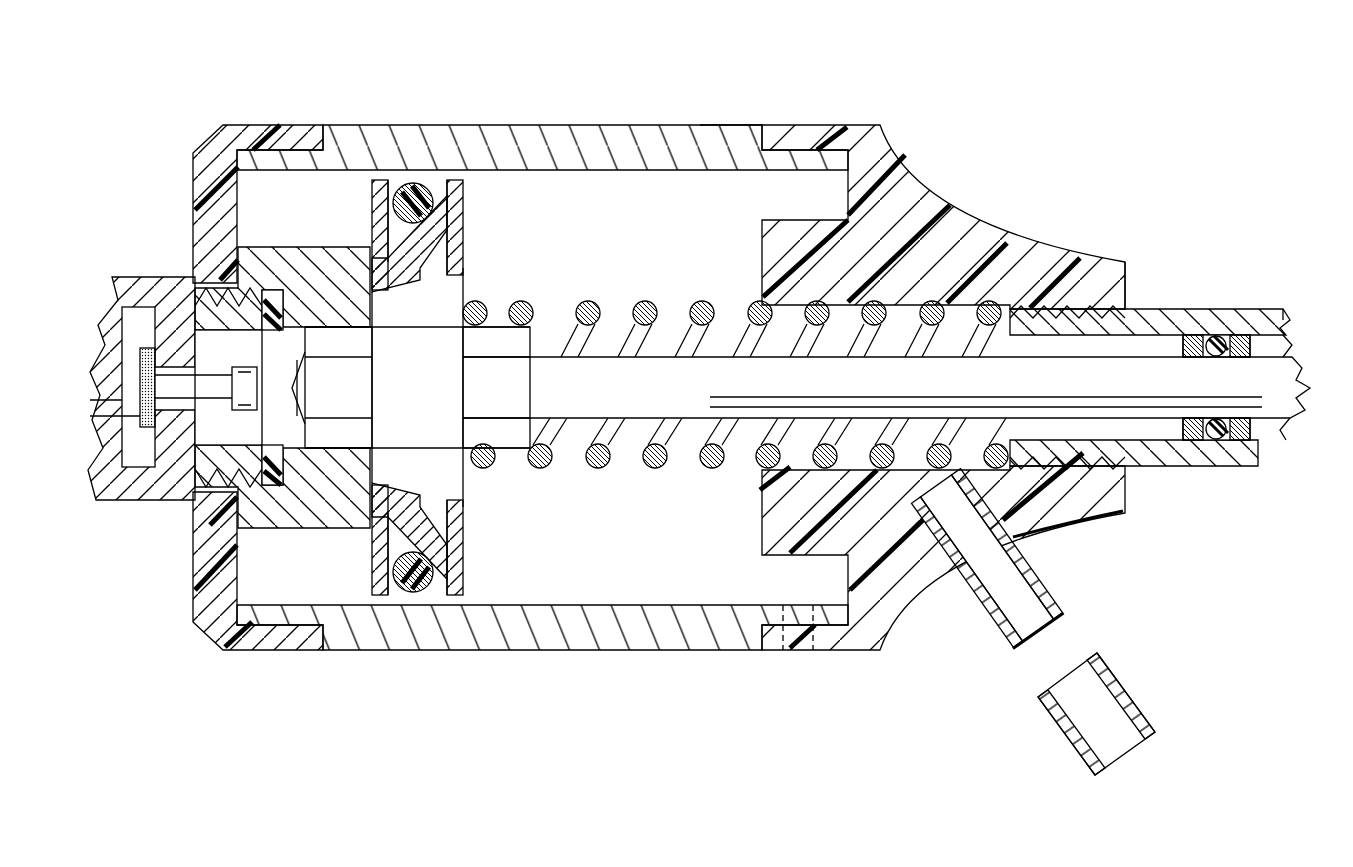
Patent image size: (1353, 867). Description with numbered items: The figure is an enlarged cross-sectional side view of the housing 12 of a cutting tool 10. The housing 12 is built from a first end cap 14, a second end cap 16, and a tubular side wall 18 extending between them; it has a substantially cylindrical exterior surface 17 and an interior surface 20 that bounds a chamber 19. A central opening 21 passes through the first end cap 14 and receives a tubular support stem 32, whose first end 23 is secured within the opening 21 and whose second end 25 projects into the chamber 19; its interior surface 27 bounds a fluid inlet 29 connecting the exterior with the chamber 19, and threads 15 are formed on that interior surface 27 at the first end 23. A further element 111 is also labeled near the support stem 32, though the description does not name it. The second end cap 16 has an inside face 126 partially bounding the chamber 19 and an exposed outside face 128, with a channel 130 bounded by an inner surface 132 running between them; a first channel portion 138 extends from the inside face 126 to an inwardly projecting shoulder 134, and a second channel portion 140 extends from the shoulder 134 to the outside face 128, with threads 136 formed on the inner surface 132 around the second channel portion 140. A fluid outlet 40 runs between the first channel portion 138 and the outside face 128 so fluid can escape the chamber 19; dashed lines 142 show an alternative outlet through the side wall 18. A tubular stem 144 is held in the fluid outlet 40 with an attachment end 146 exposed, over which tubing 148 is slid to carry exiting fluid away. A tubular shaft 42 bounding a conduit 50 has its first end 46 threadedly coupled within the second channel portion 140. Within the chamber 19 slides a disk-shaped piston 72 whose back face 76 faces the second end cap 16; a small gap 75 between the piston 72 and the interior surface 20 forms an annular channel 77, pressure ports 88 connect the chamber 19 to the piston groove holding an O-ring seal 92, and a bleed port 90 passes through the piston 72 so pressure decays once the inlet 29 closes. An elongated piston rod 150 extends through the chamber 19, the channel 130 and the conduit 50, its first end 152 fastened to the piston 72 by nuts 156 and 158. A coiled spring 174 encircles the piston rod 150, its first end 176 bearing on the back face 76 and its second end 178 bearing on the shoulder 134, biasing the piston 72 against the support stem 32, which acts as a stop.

The cutting tool 10 is at (697, 68).
The housing 12 is at (542, 386).
The first end cap 14 is at (221, 387).
The threads 15 is at (208, 290).
The second end cap 16 is at (932, 391).
The exterior surface 17 is at (737, 125).
The tubular side wall 18 is at (397, 125).
The chamber 19 is at (538, 580).
The interior surface 20 is at (530, 172).
The central opening 21 is at (195, 497).
The first end 23 is at (200, 492).
The second end 25 is at (358, 512).
The interior surface 27 is at (293, 438).
The fluid inlet 29 is at (237, 578).
The tubular support stem 32 is at (318, 523).
The fluid outlet 40 is at (1003, 555).
The tubular shaft 42 is at (1213, 315).
The first end 46 is at (1127, 297).
The conduit 50 is at (1258, 330).
The piston 72 is at (428, 525).
The gap 75 is at (437, 184).
The back face 76 is at (467, 220).
The annular channel 77 is at (458, 600).
The pressure ports 88 is at (372, 216).
The bleed port 90 is at (438, 400).
The seal 92 is at (406, 585).
The seal ring 111 is at (270, 290).
The inside face 126 is at (760, 268).
The outside face 128 is at (1128, 294).
The channel 130 is at (947, 220).
The inner surface 132 is at (983, 308).
The shoulder 134 is at (1022, 310).
The threads 136 is at (1075, 305).
The first channel portion 138 is at (862, 458).
The second channel portion 140 is at (1127, 427).
The dashed lines 142 is at (817, 650).
The tubular stem 144 is at (992, 632).
The attachment end 146 is at (1037, 599).
The tubing 148 is at (1128, 690).
The piston rod 150 is at (1253, 395).
The first end 152 is at (896, 388).
The nut 156 is at (332, 387).
The nut 158 is at (496, 387).
The coiled spring 174 is at (716, 470).
The first end 176 is at (481, 470).
The second end 178 is at (1063, 518).